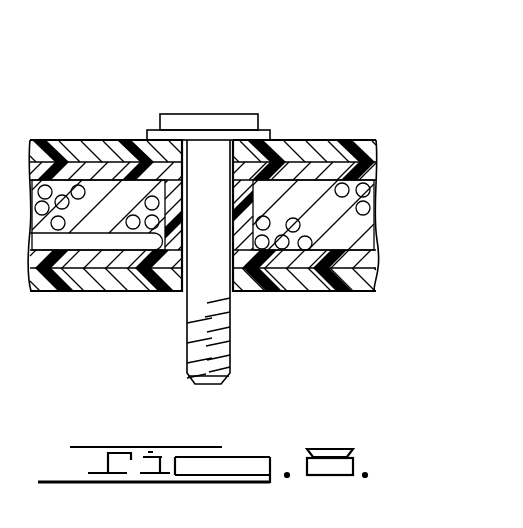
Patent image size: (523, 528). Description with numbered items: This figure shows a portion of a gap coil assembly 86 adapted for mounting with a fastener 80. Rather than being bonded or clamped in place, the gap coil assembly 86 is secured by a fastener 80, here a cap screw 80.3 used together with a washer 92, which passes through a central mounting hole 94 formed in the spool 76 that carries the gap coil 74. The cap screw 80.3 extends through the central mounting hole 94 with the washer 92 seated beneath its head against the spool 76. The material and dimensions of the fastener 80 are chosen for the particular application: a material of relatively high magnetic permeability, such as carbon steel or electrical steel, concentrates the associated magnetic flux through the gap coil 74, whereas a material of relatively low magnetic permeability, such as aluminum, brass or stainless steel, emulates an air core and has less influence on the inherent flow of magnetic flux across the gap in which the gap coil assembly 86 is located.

The gap coil 74 is at (55, 199).
The spool 76 is at (353, 270).
The fastener 80 is at (241, 222).
The cap screw 80.3 is at (241, 222).
The gap coil assembly 86 is at (210, 204).
The washer 92 is at (152, 133).
The central mounting hole 94 is at (235, 302).